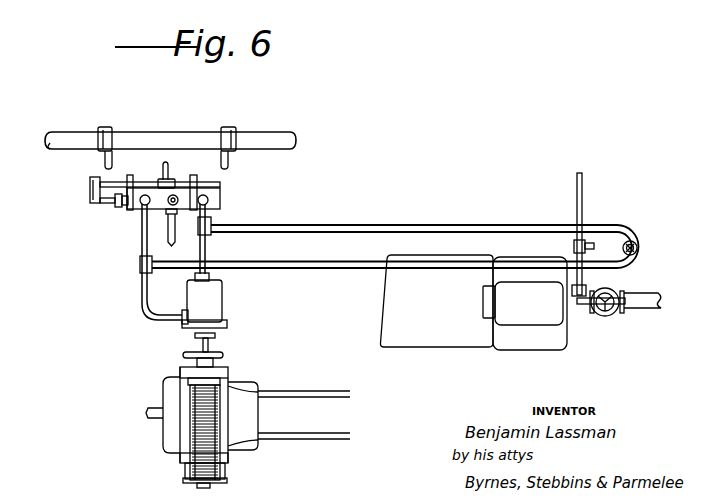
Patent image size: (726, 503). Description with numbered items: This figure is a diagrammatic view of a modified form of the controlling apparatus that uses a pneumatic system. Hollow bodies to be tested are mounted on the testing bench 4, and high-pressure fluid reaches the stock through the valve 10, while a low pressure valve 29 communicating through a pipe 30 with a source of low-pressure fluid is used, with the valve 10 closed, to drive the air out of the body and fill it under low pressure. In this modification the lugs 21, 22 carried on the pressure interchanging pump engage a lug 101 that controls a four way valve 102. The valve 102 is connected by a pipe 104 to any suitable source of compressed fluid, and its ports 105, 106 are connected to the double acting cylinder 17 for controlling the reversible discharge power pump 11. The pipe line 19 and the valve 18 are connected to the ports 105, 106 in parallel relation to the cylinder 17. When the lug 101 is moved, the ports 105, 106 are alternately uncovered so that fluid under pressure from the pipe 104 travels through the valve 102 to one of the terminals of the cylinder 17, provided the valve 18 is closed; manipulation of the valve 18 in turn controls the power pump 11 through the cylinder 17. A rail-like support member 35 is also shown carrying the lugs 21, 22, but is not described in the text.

The testing bench 4 is at (473, 302).
The valve 10 is at (577, 247).
The reversible discharge power pump 11 is at (245, 413).
The double acting cylinder 17 is at (213, 298).
The valve 18 is at (635, 246).
The pipe line 19 is at (365, 262).
The lug 21 is at (110, 133).
The lug 22 is at (230, 133).
The low pressure valve 29 is at (605, 313).
The pipe 30 is at (647, 297).
The rail 35 is at (68, 132).
The lug 101 is at (168, 166).
The four way valve 102 is at (132, 203).
The pipe 104 is at (177, 233).
The port 105 is at (210, 201).
The port 106 is at (140, 204).